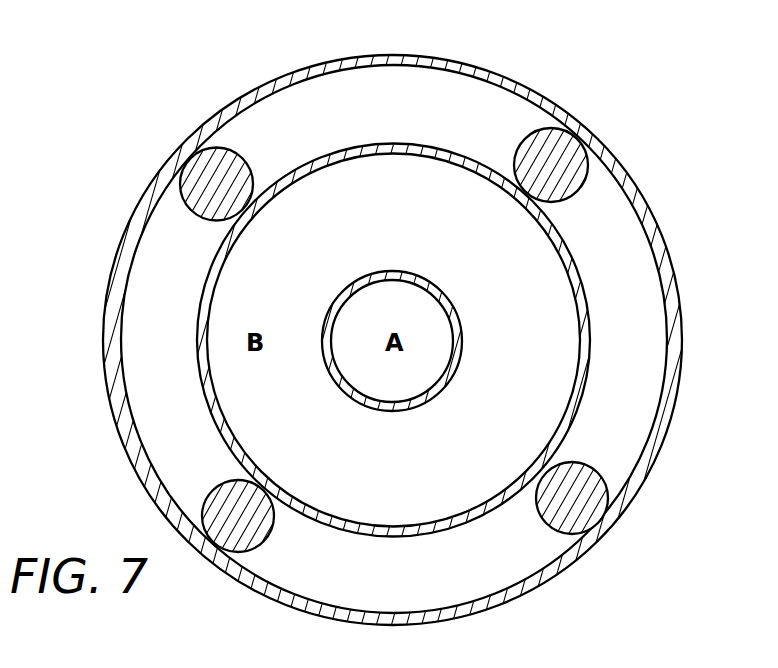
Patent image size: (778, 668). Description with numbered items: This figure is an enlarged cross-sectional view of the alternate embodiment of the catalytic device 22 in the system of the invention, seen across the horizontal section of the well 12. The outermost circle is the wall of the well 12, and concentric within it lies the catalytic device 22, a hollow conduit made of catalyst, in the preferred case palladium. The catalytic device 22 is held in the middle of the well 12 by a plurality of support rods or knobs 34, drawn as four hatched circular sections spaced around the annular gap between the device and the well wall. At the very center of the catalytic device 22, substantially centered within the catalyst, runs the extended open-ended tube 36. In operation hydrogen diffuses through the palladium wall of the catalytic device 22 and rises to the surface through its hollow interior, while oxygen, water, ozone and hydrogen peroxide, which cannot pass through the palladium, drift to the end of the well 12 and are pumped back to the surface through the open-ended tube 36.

The well 12 is at (541, 96).
The catalytic device 22 is at (417, 138).
The open-ended tube 36 is at (461, 328).
The support rods or knobs 34 is at (595, 493).